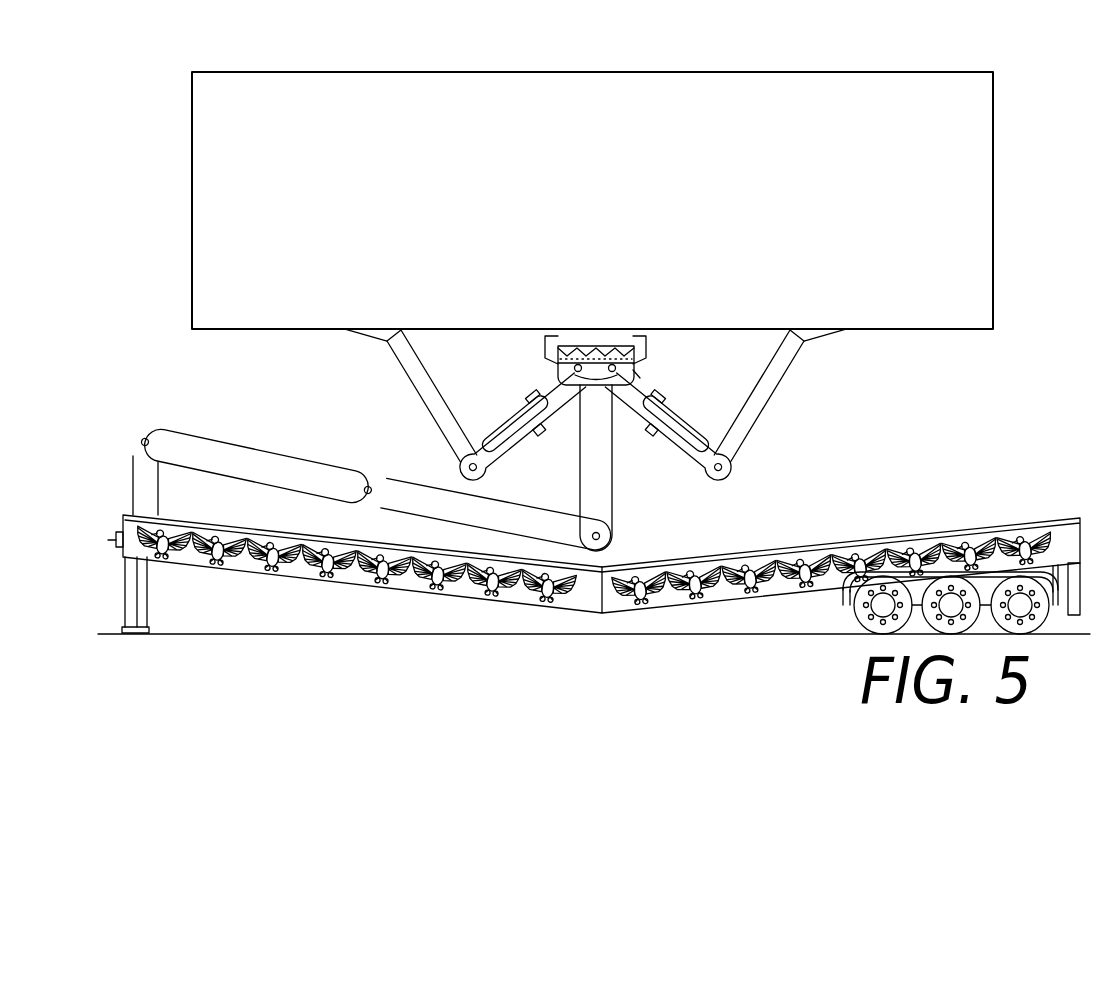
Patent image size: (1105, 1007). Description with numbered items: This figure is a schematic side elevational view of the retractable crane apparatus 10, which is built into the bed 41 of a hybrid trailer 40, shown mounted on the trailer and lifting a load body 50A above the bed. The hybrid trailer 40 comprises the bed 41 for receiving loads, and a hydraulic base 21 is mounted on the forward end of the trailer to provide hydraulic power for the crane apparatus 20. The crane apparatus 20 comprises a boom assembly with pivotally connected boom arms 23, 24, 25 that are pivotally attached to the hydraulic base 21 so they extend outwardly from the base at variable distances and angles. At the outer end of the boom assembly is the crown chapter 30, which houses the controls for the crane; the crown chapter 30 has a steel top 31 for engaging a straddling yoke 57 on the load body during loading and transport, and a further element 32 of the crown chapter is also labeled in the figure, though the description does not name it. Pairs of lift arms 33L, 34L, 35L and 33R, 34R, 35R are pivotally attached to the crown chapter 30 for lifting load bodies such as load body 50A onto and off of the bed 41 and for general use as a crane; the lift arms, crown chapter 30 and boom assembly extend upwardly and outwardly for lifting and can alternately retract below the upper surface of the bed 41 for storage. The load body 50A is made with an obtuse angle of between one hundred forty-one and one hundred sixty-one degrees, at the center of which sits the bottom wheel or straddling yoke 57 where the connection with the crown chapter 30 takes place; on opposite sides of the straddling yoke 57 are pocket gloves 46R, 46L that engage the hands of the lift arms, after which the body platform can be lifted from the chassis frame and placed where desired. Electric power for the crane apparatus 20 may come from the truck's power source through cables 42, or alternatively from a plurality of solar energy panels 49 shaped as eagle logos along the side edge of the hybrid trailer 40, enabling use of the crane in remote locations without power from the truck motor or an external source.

The retractable crane apparatus 10 is at (164, 354).
The crane apparatus 20 is at (143, 428).
The hydraulic base 21 is at (133, 502).
The boom arm 23 is at (285, 478).
The boom arm 24 is at (540, 512).
The boom arm 25 is at (612, 512).
The crown chapter 30 is at (631, 302).
The steel top 31 is at (620, 343).
The hub plate 32 is at (631, 340).
The lift arm 33R is at (553, 378).
The lift arm 33L is at (653, 390).
The lift arm 34R is at (500, 435).
The lift arm 34L is at (687, 450).
The lift arm 35R is at (414, 384).
The lift arm 35L is at (763, 387).
The pocket glove 46R is at (384, 333).
The pocket glove 46L is at (810, 332).
The straddling yoke 57 is at (655, 348).
The load body 50A is at (258, 70).
The hybrid trailer 40 is at (1048, 518).
The bed 41 is at (538, 605).
The cables 42 is at (116, 537).
The solar energy panels 49 is at (373, 567).